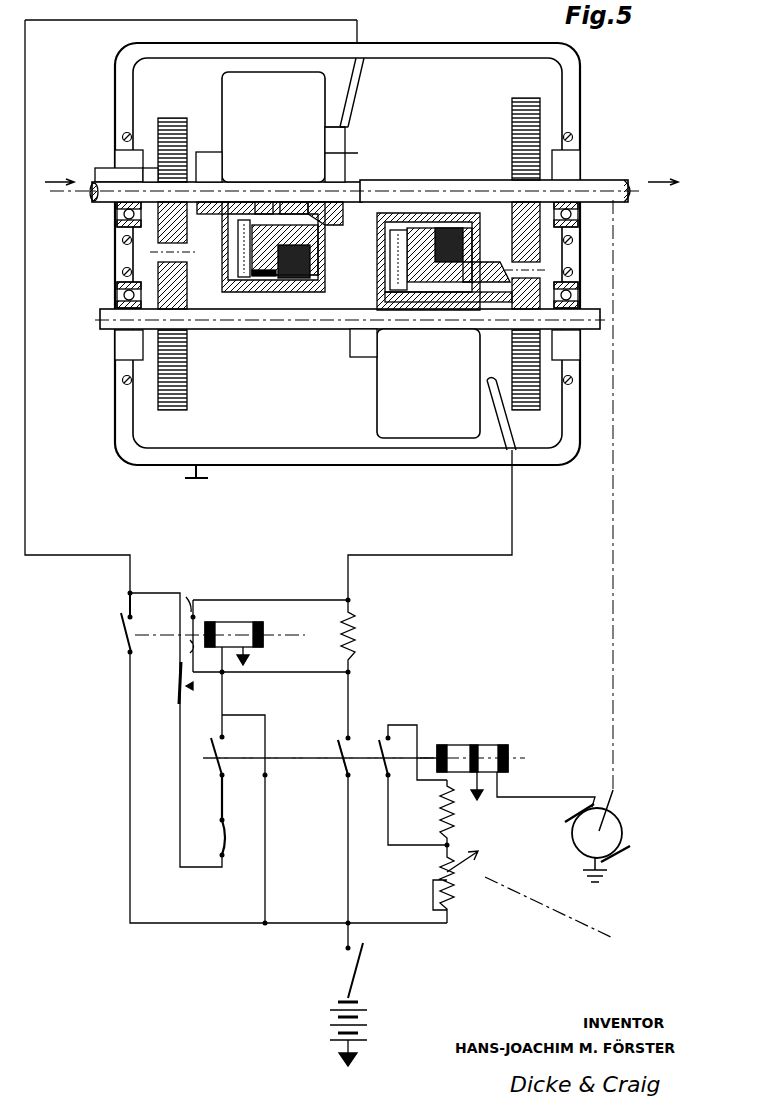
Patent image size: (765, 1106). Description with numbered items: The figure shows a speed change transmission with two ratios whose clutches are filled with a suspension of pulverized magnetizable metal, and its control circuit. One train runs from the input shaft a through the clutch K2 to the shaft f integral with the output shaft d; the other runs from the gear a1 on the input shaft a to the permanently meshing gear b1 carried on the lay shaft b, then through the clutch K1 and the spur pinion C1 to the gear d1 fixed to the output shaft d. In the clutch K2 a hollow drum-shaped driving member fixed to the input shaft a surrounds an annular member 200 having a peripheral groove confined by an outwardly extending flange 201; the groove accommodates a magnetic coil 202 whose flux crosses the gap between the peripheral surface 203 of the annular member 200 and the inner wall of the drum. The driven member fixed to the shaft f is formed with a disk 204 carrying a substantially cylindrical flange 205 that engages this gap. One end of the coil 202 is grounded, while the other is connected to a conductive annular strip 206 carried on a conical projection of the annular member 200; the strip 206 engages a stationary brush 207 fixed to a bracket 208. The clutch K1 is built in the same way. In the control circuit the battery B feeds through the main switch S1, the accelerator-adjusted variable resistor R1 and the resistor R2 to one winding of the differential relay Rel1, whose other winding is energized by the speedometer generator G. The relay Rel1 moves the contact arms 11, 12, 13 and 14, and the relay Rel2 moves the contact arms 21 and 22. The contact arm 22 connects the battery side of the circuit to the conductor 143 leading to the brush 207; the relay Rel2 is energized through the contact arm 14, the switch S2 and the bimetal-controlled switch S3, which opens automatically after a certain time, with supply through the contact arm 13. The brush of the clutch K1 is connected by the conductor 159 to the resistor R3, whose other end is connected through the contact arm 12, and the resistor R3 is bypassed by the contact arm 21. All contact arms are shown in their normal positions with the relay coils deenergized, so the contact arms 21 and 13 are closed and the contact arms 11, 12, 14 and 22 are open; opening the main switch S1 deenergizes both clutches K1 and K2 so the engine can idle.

The conductor 143 is at (27, 421).
The conductor 159 is at (510, 533).
The contact arm 21 is at (265, 625).
The contact arm 22 is at (120, 640).
The contact arm 14 is at (228, 756).
The contact arm 13 is at (277, 830).
The contact arm 12 is at (354, 810).
The contact arm 11 is at (413, 785).
The annular member 200 is at (325, 215).
The flange 201 is at (320, 262).
The magnetic coil 202 is at (306, 278).
The peripheral surface 203 is at (238, 278).
The disk 204 is at (236, 248).
The cylindrical flange 205 is at (263, 277).
The conductive annular strip 206 is at (359, 154).
The stationary brush 207 is at (349, 128).
The bracket 208 is at (366, 78).
The input shaft a is at (203, 202).
The gear a1 is at (183, 120).
The lay shaft b is at (350, 339).
The gear b1 is at (188, 398).
The output shaft d is at (519, 173).
The gear d1 is at (513, 128).
The spur pinion C1 is at (525, 390).
The clutch K1 is at (433, 389).
The clutch K2 is at (270, 127).
The variable resistor R1 is at (441, 876).
The resistor R2 is at (441, 812).
The resistor R3 is at (359, 636).
The main switch S1 is at (366, 970).
The switch S2 is at (236, 815).
The bimetal-controlled switch S3 is at (178, 692).
The differential relay Rel1 is at (485, 752).
The relay Rel2 is at (235, 631).
The battery B is at (356, 1034).
The speedometer generator G is at (619, 826).
The shaft f is at (434, 180).